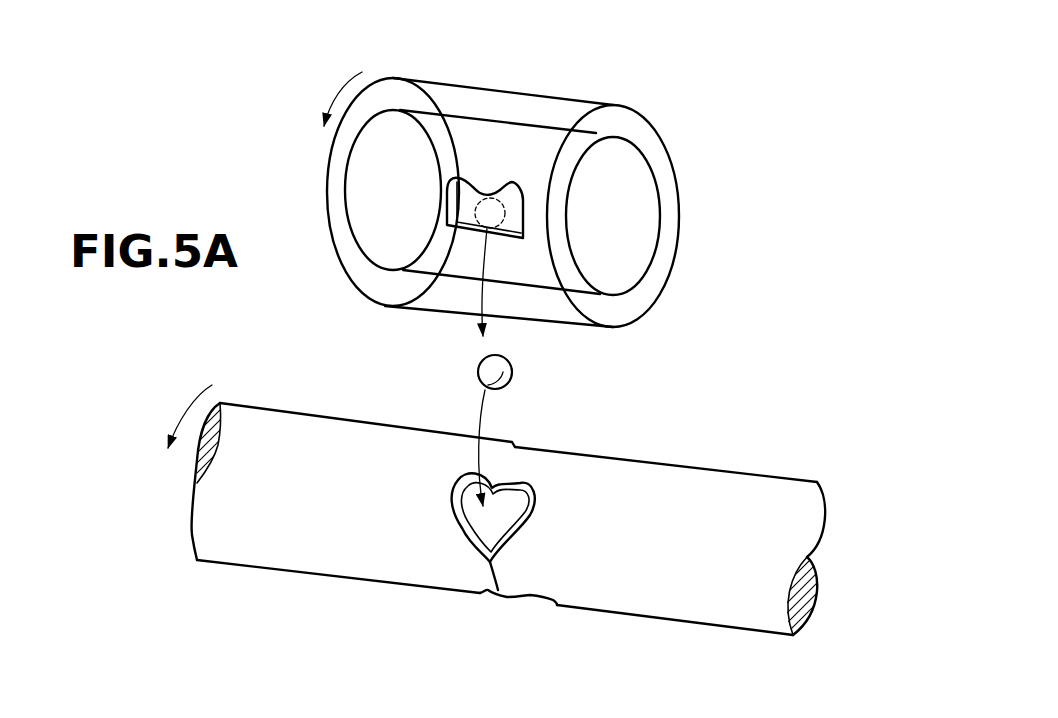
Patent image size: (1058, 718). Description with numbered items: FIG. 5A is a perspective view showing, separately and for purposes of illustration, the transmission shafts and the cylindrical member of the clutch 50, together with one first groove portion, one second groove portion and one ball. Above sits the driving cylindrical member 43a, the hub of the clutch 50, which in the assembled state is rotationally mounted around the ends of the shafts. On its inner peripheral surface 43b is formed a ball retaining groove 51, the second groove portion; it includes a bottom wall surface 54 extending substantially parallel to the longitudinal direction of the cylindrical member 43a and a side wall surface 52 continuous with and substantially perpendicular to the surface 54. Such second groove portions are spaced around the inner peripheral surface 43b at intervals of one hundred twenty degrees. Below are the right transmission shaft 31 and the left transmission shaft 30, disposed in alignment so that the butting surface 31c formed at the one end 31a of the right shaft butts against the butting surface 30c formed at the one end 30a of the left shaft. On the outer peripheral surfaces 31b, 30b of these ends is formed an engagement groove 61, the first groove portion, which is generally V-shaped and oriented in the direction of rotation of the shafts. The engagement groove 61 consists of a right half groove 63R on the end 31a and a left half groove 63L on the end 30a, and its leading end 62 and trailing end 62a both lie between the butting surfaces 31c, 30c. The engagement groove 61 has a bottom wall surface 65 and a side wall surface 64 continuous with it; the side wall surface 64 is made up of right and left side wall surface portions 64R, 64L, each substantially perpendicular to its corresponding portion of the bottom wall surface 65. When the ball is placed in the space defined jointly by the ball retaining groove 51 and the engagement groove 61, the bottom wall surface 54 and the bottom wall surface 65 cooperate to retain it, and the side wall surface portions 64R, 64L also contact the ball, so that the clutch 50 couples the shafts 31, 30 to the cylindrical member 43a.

The clutch 50 is at (242, 184).
The driving cylindrical member 43a is at (468, 82).
The inner peripheral surface 43b is at (638, 175).
The bottom wall surface 54 is at (517, 192).
The side wall surface 52 is at (447, 214).
The ball retaining groove 51 is at (464, 216).
The right transmission shaft 31 is at (218, 560).
The one end 31a is at (326, 504).
The outer peripheral surface 31b is at (365, 551).
The butting surface 31c is at (565, 686).
The left transmission shaft 30 is at (763, 640).
The one end 30a is at (712, 560).
The outer peripheral surface 30b is at (658, 581).
The butting surface 30c is at (492, 594).
The leading end 62 is at (488, 563).
The trailing end 62a is at (492, 489).
The bottom wall surface 65 is at (487, 524).
The engagement groove 61 is at (724, 358).
The right half groove 63R is at (529, 506).
The left half groove 63L is at (543, 500).
The side wall surface 64 is at (468, 658).
The right side wall surface portion 64R is at (462, 532).
The left side wall surface portion 64L is at (507, 545).